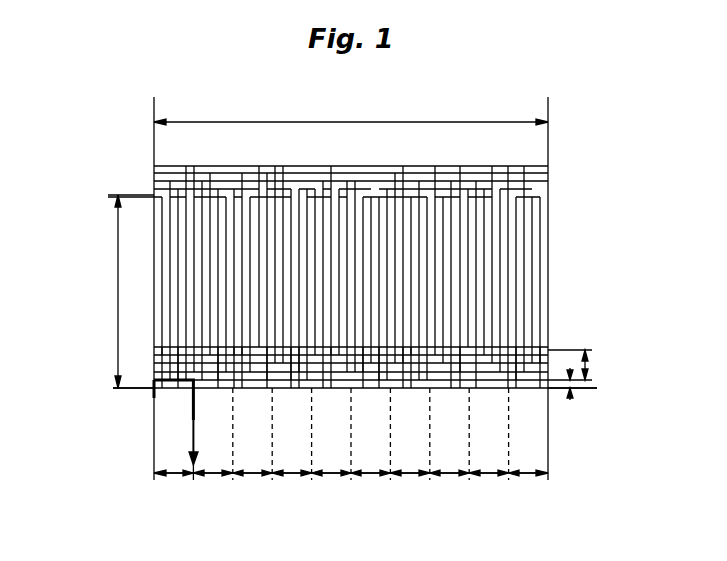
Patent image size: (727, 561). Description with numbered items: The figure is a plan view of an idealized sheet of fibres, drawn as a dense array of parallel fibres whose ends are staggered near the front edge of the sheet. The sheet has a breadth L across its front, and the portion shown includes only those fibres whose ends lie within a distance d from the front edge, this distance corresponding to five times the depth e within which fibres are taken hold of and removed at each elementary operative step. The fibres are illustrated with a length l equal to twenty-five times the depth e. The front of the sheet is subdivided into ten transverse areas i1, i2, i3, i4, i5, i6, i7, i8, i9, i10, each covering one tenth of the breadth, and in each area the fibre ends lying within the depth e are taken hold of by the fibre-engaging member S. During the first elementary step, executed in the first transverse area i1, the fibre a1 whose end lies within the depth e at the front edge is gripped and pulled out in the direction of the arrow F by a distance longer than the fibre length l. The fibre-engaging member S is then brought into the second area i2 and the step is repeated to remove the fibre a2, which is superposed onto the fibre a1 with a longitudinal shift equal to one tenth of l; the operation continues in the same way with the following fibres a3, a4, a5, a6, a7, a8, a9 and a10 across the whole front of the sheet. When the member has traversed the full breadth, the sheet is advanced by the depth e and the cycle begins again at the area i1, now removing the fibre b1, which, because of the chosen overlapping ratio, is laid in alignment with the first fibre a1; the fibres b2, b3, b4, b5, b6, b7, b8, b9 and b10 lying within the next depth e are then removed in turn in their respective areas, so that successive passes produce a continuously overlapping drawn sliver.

The breadth of the sheet L is at (351, 131).
The length of the fibres l is at (127, 291).
The distance from the front edge d is at (576, 366).
The depth of elementary removal e is at (572, 384).
The fibre-engaging member S is at (150, 399).
The arrow indicating removal direction F is at (199, 450).
The first transverse area i1 is at (173, 465).
The second transverse area i2 is at (213, 465).
The third transverse area i3 is at (252, 465).
The fourth transverse area i4 is at (292, 465).
The fifth transverse area i5 is at (331, 465).
The sixth transverse area i6 is at (370, 465).
The seventh transverse area i7 is at (410, 465).
The eighth transverse area i8 is at (449, 465).
The ninth transverse area i9 is at (489, 465).
The tenth transverse area i10 is at (528, 465).
The first fibre a1 is at (178, 388).
The second fibre a2 is at (234, 388).
The third fibre a3 is at (267, 388).
The fourth fibre a4 is at (299, 388).
The fifth fibre a5 is at (331, 388).
The sixth fibre a6 is at (379, 388).
The seventh fibre a7 is at (411, 388).
The eighth fibre a8 is at (460, 388).
The ninth fibre a9 is at (508, 388).
The tenth fibre a10 is at (540, 388).
The first fibre of second pass b1 is at (162, 388).
The second fibre of second pass b2 is at (218, 388).
The third fibre of second pass b3 is at (242, 388).
The fourth fibre of second pass b4 is at (291, 388).
The fifth fibre of second pass b5 is at (323, 388).
The sixth fibre of second pass b6 is at (363, 388).
The seventh fibre of second pass b7 is at (403, 388).
The eighth fibre of second pass b8 is at (451, 388).
The ninth fibre of second pass b9 is at (476, 388).
The tenth fibre of second pass b10 is at (516, 388).